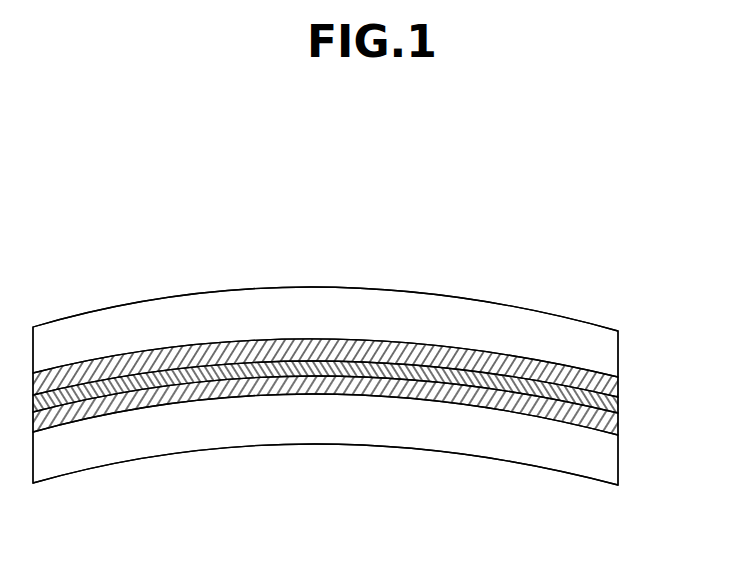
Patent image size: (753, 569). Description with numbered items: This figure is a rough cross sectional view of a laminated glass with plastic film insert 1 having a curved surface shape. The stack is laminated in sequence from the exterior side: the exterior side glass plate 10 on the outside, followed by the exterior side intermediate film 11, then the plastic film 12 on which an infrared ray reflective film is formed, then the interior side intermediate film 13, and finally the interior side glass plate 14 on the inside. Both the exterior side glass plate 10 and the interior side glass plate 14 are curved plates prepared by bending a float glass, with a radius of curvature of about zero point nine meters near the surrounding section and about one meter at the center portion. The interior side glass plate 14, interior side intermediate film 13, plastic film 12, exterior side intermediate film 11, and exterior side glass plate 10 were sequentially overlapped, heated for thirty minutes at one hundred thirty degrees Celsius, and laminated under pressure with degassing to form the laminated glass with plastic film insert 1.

The laminated glass with plastic film insert 1 is at (323, 234).
The exterior side glass plate 10 is at (498, 301).
The exterior side intermediate film 11 is at (618, 384).
The plastic film 12 is at (618, 409).
The interior side intermediate film 13 is at (618, 427).
The interior side glass plate 14 is at (522, 463).